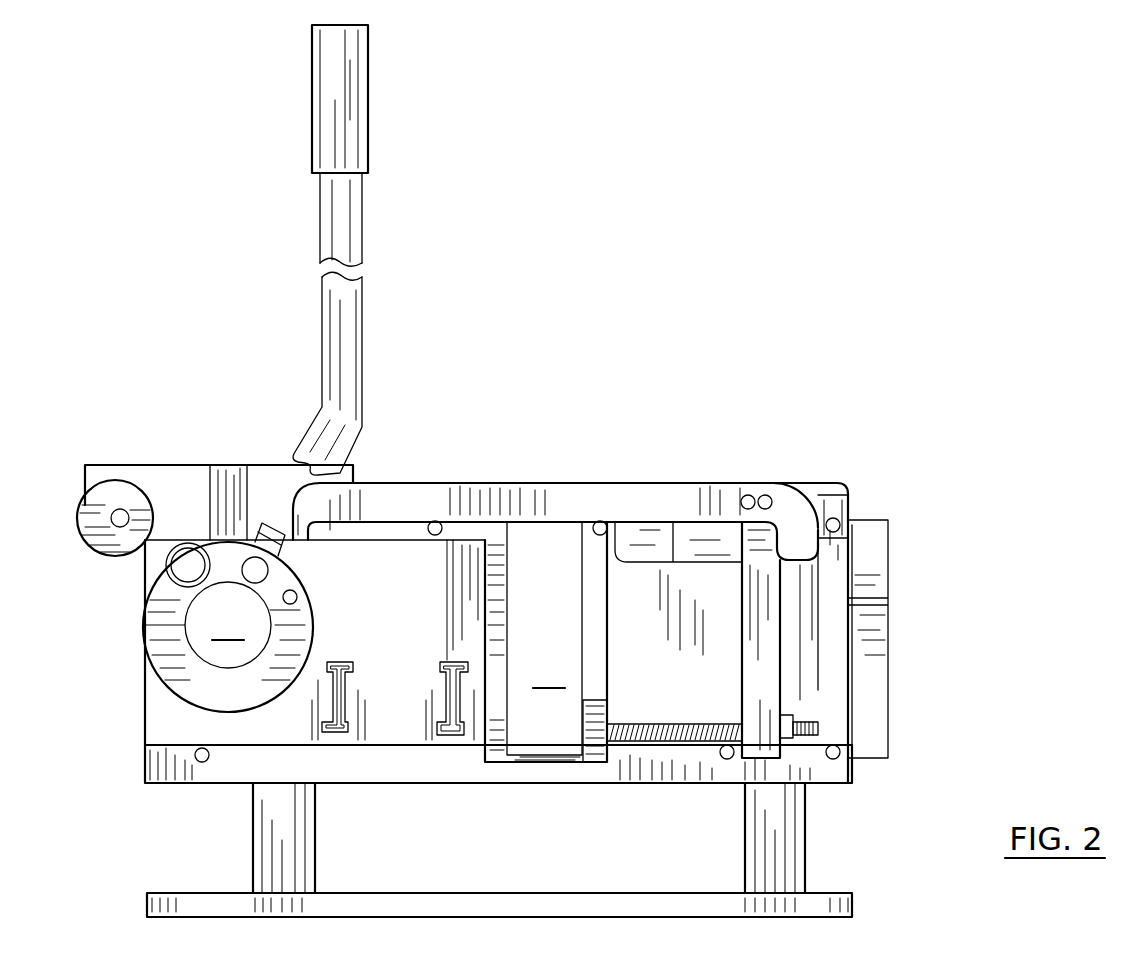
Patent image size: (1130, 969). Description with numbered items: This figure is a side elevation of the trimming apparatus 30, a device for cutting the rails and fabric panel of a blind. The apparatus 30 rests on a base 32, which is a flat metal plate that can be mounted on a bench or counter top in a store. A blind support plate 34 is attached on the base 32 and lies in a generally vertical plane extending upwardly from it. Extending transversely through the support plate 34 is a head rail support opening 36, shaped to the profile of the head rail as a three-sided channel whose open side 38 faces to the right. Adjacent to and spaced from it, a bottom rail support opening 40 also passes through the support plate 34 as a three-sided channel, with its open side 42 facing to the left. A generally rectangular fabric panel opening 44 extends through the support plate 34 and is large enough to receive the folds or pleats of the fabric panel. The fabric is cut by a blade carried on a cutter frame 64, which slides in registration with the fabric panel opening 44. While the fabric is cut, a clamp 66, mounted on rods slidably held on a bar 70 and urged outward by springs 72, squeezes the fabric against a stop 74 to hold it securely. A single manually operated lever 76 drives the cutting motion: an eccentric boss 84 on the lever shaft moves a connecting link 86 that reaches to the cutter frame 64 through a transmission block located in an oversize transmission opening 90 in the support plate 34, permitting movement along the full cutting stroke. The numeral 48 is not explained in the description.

The trimming apparatus 30 is at (882, 452).
The base 32 is at (545, 893).
The blind support plate 34 is at (634, 768).
The head rail support opening 36 is at (347, 660).
The open side 38 is at (356, 694).
The bottom rail support opening 40 is at (463, 660).
The open side 42 is at (428, 696).
The fabric panel opening 44 is at (517, 641).
The support leg 48 is at (278, 833).
The cutter frame 64 is at (875, 540).
The clamp 66 is at (592, 700).
The bar 70 is at (760, 655).
The springs 72 is at (700, 722).
The stop 74 is at (497, 615).
The lever 76 is at (340, 220).
The eccentric boss 84 is at (195, 685).
The connecting link 86 is at (592, 500).
The transmission opening 90 is at (694, 540).